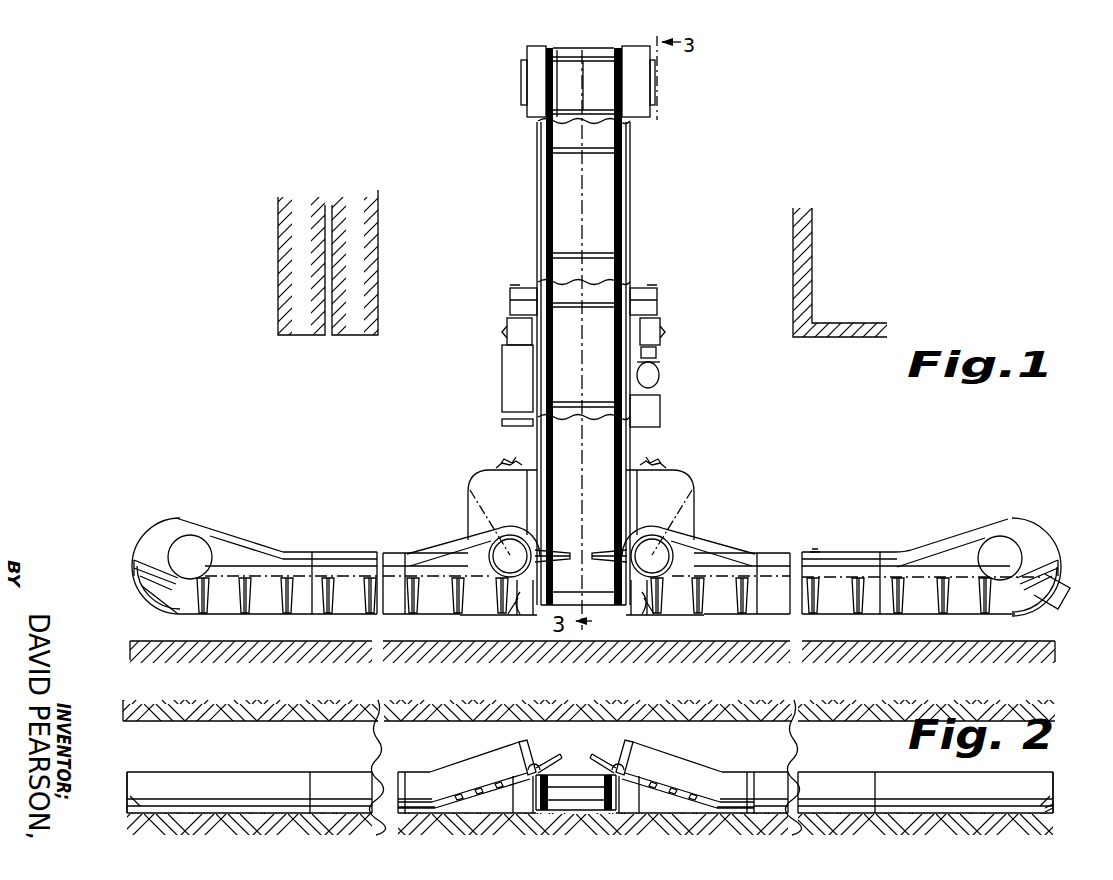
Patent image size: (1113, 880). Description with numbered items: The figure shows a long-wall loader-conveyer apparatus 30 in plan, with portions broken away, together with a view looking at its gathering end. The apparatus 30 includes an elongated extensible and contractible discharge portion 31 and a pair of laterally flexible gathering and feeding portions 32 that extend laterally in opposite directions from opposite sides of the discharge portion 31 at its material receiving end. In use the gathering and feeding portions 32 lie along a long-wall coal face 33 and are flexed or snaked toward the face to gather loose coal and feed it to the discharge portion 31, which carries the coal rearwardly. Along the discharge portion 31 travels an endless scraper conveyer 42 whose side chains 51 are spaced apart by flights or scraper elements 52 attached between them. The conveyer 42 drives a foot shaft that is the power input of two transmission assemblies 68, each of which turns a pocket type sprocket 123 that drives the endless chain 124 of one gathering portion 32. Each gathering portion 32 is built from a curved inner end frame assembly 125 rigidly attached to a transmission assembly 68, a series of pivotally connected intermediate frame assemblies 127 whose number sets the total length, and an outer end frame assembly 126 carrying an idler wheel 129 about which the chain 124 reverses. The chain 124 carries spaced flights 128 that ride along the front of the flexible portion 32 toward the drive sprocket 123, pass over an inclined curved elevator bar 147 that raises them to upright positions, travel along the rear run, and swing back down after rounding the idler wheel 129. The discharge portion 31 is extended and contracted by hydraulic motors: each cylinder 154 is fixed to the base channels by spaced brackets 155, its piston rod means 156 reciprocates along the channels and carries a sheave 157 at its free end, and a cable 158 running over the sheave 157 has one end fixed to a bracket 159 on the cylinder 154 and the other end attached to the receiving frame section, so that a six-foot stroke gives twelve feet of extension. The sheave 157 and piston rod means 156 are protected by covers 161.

In FIG. 1, the loader-conveyer apparatus 30 is at (527, 90).
In FIG. 2, the loader-conveyer apparatus 30 is at (1060, 806).
In FIG. 1, the discharge portion 31 is at (634, 140).
In FIG. 2, the discharge portion 31 is at (533, 808).
In FIG. 1, the gathering and feeding portions 32 is at (349, 550).
In FIG. 2, the gathering and feeding portions 32 is at (245, 770).
In FIG. 1, the long-wall coal face 33 is at (1040, 646).
In FIG. 1, the endless scraper conveyer 42 is at (567, 244).
In FIG. 1, the side chains 51 is at (601, 39).
In FIG. 2, the side chains 51 is at (548, 810).
In FIG. 1, the flights 52 is at (590, 116).
In FIG. 2, the flights 52 is at (566, 784).
In FIG. 1, the transmission assemblies 68 is at (483, 470).
In FIG. 2, the transmission assemblies 68 is at (514, 748).
In FIG. 1, the pocket type sprocket 123 is at (470, 490).
In FIG. 1, the endless chain 124 is at (193, 552).
In FIG. 2, the endless chain 124 is at (430, 772).
In FIG. 1, the inner end frame assembly 125 is at (453, 540).
In FIG. 2, the inner end frame assembly 125 is at (462, 766).
In FIG. 1, the outer end frame assembly 126 is at (157, 527).
In FIG. 2, the outer end frame assembly 126 is at (163, 772).
In FIG. 1, the intermediate frame assemblies 127 is at (320, 550).
In FIG. 2, the intermediate frame assemblies 127 is at (382, 776).
In FIG. 1, the flights 128 is at (606, 548).
In FIG. 2, the flights 128 is at (129, 800).
In FIG. 1, the idler wheel 129 is at (180, 530).
In FIG. 1, the elevator bar 147 is at (510, 600).
In FIG. 1, the cylinder 154 is at (507, 292).
In FIG. 1, the brackets 155 is at (522, 306).
In FIG. 1, the piston rod means 156 is at (658, 350).
In FIG. 1, the sheave 157 is at (660, 376).
In FIG. 1, the cable 158 is at (662, 358).
In FIG. 1, the bracket 159 is at (518, 331).
In FIG. 1, the covers 161 is at (520, 391).